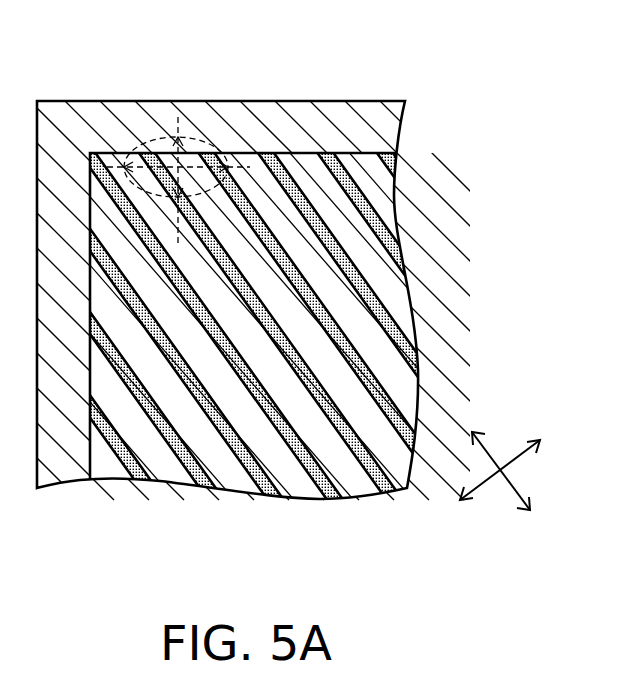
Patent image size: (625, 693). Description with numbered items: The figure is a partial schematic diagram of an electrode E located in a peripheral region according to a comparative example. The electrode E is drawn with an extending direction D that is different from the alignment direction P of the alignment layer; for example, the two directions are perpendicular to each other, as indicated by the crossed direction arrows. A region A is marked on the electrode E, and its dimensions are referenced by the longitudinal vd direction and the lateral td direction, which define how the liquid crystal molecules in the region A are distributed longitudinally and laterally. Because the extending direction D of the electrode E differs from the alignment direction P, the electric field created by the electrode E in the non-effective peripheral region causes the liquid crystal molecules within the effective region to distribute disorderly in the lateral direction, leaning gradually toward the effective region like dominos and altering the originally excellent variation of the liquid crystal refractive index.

The region A' A is at (207, 140).
The td direction td is at (187, 182).
The vd direction vd is at (186, 193).
The electrode E is at (367, 207).
The alignment direction P is at (513, 462).
The extending direction D is at (513, 488).